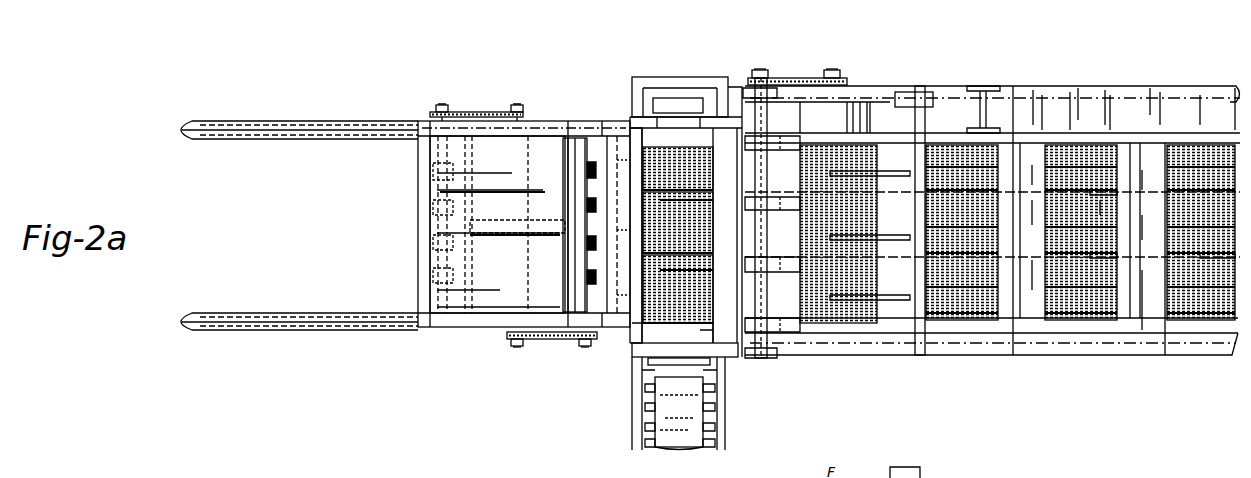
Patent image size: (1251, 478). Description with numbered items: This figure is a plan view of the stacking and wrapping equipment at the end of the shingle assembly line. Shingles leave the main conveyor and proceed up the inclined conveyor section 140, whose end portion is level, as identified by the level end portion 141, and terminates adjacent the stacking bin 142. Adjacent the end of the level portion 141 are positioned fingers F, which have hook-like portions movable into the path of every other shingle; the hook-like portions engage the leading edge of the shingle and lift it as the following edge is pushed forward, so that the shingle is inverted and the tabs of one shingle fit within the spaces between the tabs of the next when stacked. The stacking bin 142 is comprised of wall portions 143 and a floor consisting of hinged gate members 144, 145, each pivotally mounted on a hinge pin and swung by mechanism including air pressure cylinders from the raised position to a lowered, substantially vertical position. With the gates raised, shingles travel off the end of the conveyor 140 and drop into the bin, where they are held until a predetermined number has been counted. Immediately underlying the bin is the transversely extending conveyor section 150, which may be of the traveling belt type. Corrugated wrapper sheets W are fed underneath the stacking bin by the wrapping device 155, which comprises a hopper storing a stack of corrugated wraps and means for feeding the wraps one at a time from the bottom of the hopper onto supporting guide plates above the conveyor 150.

The inclined conveyor section 140 is at (1153, 338).
The level end portion 141 is at (908, 118).
The stacking bin 142 is at (748, 64).
The wall portions 143 is at (628, 347).
The hinged gate member 144 is at (637, 330).
The hinged gate member 145 is at (707, 332).
The transversely extending conveyor section 150 is at (640, 452).
The wrapping device 155 is at (473, 337).
The corrugated wrapper sheets W is at (530, 155).
The fingers F is at (865, 297).